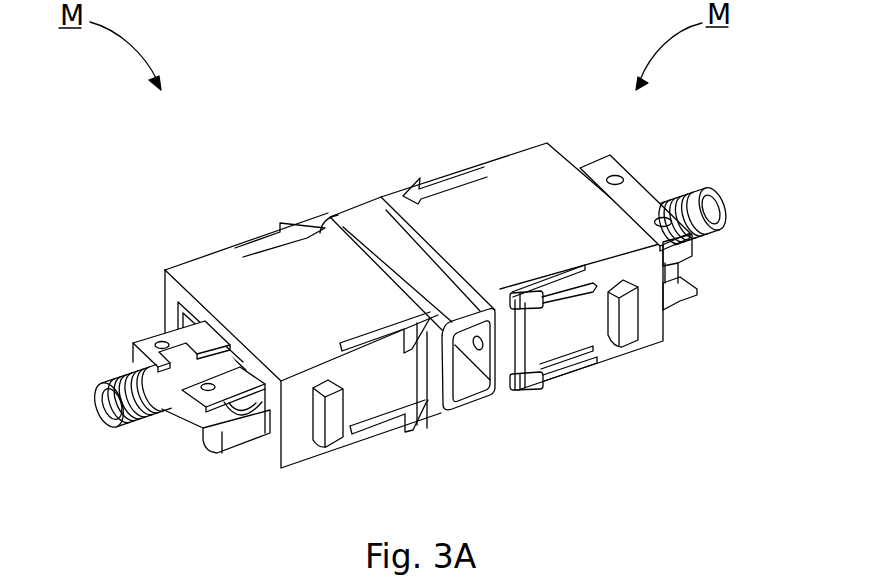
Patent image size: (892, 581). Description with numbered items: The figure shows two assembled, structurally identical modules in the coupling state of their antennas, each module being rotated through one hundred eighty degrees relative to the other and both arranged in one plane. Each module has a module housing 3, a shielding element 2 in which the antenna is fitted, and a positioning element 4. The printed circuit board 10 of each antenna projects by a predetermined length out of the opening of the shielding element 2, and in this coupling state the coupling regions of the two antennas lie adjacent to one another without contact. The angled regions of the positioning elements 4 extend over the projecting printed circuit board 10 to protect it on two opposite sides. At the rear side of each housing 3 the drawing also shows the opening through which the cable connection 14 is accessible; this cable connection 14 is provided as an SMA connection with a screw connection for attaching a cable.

The shielding element 2 is at (637, 200).
The module housing 3 is at (208, 277).
The positioning element 4 is at (360, 221).
The printed circuit board 10 is at (165, 398).
The cable connection 14 is at (146, 424).